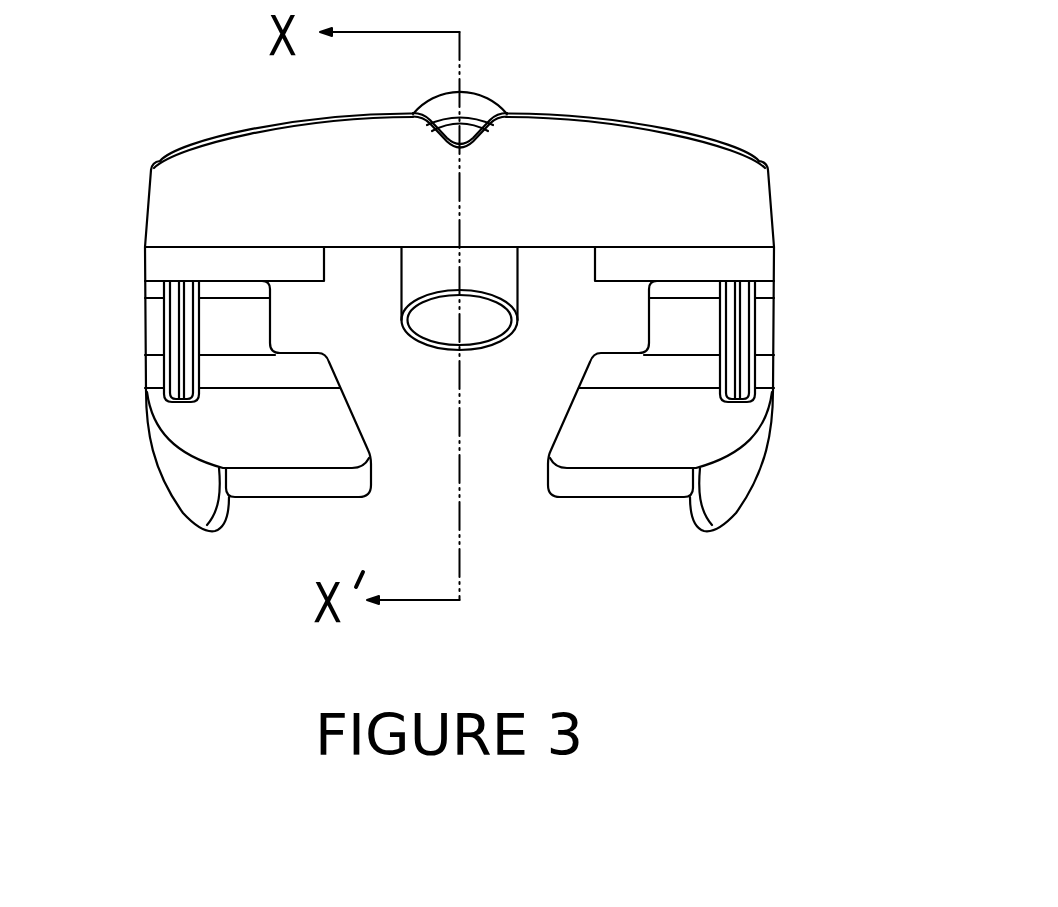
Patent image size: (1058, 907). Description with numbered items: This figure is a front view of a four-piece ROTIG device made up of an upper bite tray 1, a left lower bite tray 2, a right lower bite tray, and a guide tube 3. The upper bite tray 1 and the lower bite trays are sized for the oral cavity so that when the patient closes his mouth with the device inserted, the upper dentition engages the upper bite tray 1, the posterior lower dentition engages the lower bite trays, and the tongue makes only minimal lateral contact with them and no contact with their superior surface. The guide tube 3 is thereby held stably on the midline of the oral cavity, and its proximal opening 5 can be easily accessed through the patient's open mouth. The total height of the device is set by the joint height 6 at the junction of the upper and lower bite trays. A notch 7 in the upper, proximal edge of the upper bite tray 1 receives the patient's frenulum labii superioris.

The upper bite tray 1 is at (805, 150).
The left lower bite tray 2 is at (790, 263).
The guide tube 3 is at (484, 92).
The proximal opening 5 is at (470, 323).
The joint height 6 is at (130, 273).
The notch 7 is at (478, 147).